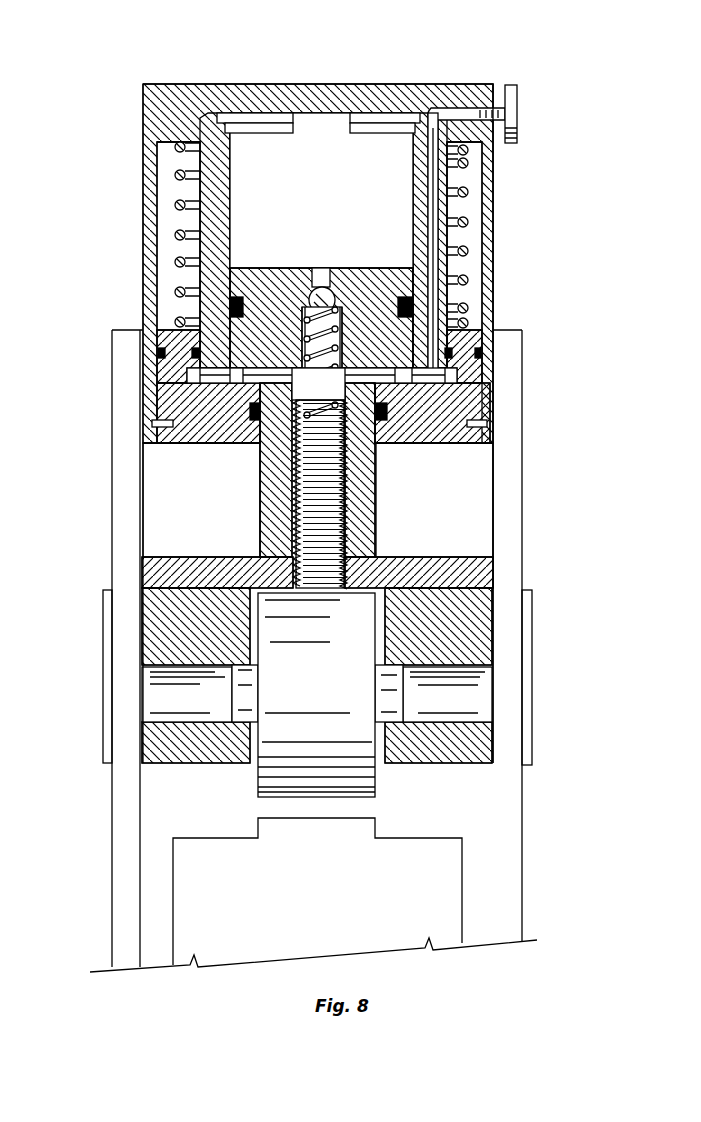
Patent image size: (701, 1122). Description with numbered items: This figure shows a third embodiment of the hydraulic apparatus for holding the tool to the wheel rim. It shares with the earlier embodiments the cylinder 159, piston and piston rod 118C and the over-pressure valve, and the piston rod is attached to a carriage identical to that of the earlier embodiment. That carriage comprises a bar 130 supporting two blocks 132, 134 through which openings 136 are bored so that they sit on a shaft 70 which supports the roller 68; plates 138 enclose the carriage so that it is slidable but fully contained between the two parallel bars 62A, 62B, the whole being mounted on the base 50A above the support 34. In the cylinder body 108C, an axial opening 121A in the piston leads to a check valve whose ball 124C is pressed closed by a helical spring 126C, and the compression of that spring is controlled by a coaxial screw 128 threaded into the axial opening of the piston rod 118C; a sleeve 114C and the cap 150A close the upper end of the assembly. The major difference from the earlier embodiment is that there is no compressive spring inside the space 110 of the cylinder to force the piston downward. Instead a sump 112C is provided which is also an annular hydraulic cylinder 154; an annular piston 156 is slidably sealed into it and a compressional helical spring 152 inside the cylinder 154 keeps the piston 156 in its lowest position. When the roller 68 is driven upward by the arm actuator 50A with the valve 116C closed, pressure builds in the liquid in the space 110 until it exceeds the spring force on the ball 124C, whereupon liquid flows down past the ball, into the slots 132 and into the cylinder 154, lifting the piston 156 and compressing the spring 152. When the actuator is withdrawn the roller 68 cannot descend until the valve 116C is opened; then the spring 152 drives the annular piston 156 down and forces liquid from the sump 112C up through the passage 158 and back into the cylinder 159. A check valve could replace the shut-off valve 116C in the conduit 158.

The housing cap 150A is at (478, 84).
The valve 116C is at (517, 114).
The passage 158 is at (428, 150).
The cylinder 159 is at (236, 190).
The space 110 is at (331, 176).
The compressional helical spring 152 is at (462, 223).
The sleeve 114C is at (432, 233).
The axial opening 121A is at (325, 266).
The cylinder 108C is at (250, 268).
The ball 124C is at (330, 290).
The valve spring 126C is at (340, 360).
The hydraulic cylinder 154 is at (478, 290).
The piston 156 is at (463, 340).
The sump 112C is at (457, 383).
The slots 132 is at (252, 398).
The piston body 118C is at (378, 480).
The coaxial screw 128 is at (348, 507).
The bar 130 is at (455, 557).
The block 134 is at (168, 623).
The shaft 70 is at (248, 696).
The openings 136 is at (460, 678).
The roller 68 is at (376, 781).
The lug 138 is at (102, 706).
The parallel bar 62A is at (112, 816).
The parallel bar 62B is at (522, 815).
The arm actuator 50A is at (345, 818).
The foundation 34 is at (327, 888).